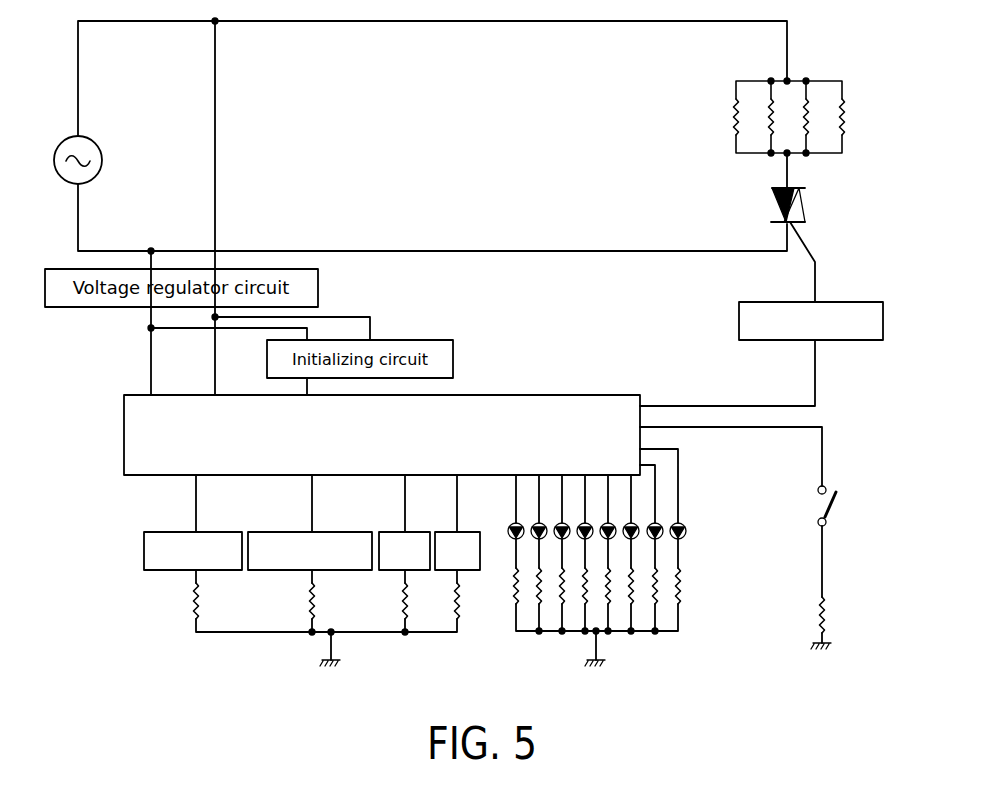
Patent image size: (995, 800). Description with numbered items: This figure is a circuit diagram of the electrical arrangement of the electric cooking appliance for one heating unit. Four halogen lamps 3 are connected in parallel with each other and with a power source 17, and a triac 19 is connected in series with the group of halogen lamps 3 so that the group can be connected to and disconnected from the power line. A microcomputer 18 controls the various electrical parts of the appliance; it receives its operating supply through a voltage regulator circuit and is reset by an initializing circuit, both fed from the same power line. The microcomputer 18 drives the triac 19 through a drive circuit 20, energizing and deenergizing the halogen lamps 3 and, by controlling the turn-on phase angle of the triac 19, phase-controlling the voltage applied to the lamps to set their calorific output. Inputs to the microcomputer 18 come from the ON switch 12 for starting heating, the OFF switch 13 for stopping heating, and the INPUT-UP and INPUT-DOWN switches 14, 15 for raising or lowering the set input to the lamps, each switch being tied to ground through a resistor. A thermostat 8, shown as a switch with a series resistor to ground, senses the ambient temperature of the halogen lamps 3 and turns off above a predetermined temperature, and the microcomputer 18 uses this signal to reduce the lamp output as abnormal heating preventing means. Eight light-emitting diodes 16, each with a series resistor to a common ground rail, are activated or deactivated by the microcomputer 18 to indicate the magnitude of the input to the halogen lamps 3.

The halogen lamp 3 is at (847, 116).
The thermostat 8 is at (838, 503).
The ON switch 12 is at (470, 572).
The OFF switch 13 is at (418, 572).
The INPUT-UP switch 14 is at (218, 572).
The INPUT-DOWN switch 15 is at (343, 572).
The light-emitting diodes 16 is at (687, 531).
The power source 17 is at (103, 158).
The microcomputer 18 is at (572, 393).
The triac 19 is at (808, 205).
The drive circuit 20 is at (862, 341).